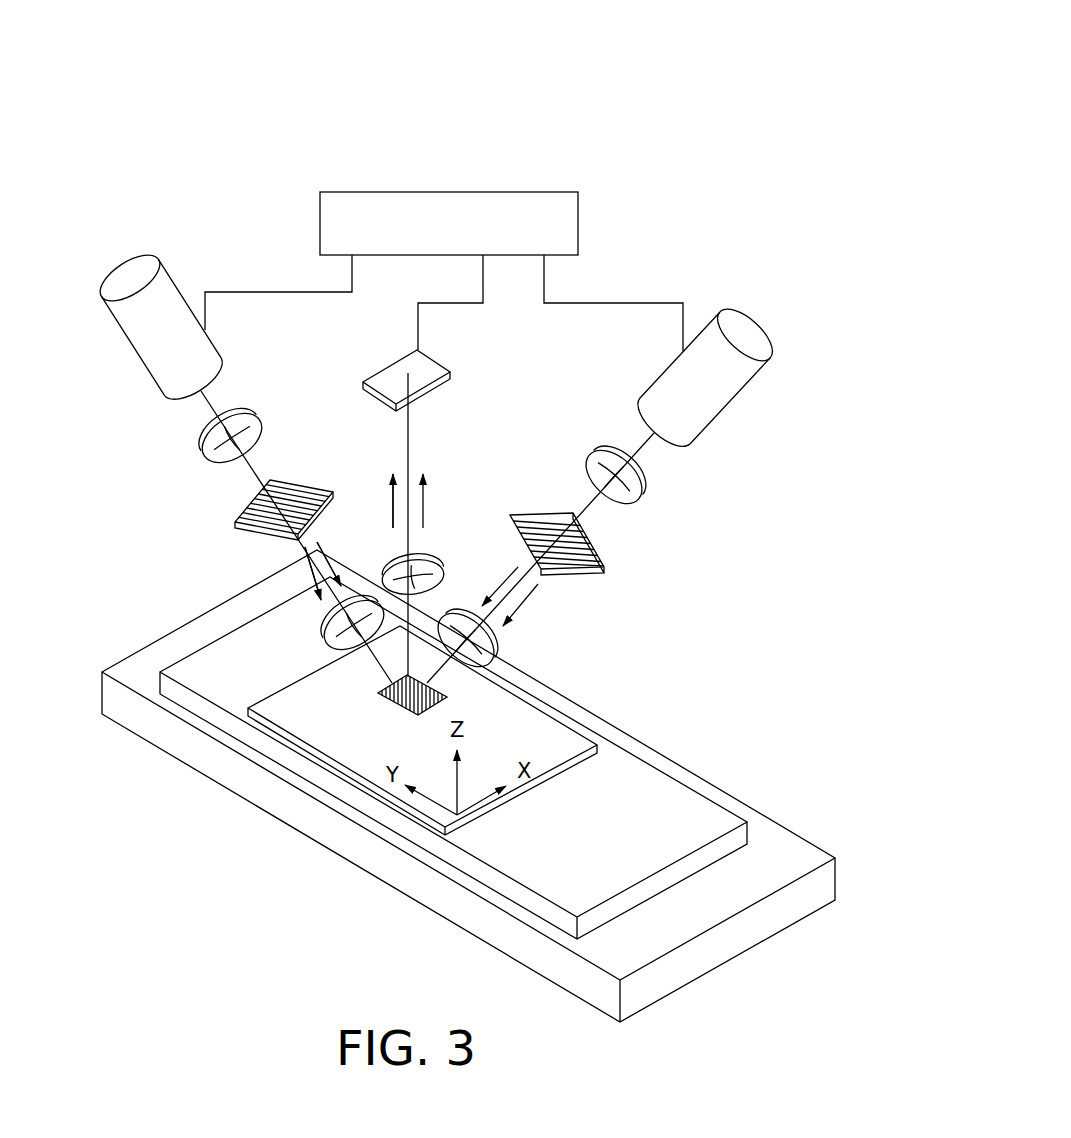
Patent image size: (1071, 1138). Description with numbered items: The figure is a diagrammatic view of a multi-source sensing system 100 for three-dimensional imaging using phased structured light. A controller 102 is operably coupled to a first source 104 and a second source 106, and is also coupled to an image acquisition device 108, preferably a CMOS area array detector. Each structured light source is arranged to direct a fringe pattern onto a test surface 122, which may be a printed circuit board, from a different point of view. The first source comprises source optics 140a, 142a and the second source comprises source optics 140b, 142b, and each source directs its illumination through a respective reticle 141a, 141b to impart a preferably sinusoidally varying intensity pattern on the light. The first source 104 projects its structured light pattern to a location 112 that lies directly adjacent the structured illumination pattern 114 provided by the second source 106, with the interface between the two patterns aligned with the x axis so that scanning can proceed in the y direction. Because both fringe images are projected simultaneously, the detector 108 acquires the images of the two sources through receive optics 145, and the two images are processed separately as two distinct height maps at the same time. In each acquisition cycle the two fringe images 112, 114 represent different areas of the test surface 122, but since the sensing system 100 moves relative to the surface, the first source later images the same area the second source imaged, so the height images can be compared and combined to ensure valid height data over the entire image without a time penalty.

The multi-source sensing system 100 is at (552, 100).
The controller 102 is at (430, 191).
The first source 104 is at (188, 281).
The second source 106 is at (701, 321).
The image acquisition device 108 is at (434, 345).
The location 112 is at (374, 694).
The structured illumination pattern 114 is at (394, 711).
The test surface 122 is at (566, 715).
The source optics 140a is at (206, 457).
The source optics 140b is at (652, 488).
The reticle 141a is at (259, 540).
The reticle 141b is at (600, 538).
The source optics 142a is at (321, 613).
The source optics 142b is at (500, 650).
The receive optics 145 is at (441, 570).